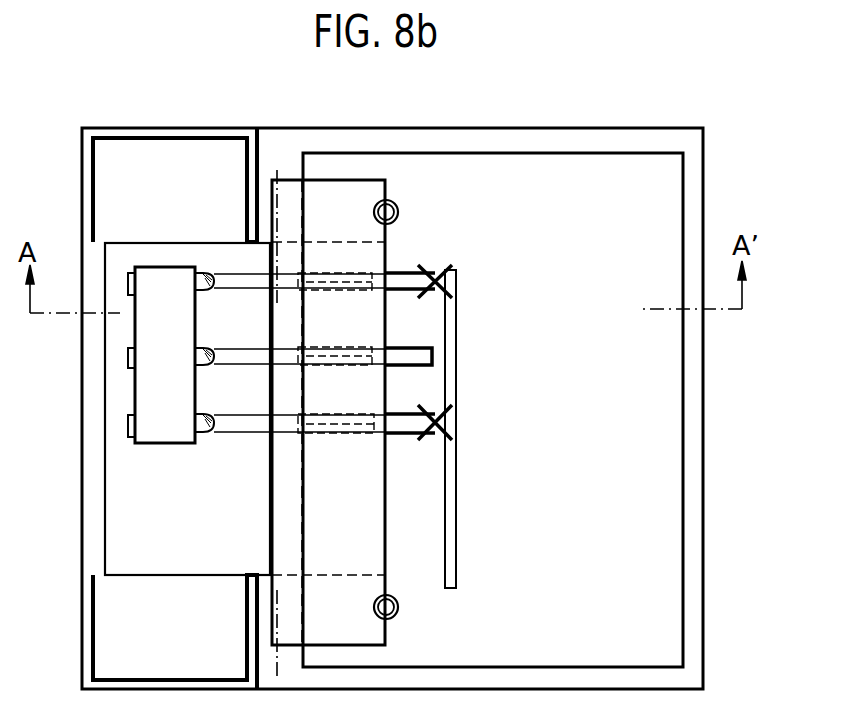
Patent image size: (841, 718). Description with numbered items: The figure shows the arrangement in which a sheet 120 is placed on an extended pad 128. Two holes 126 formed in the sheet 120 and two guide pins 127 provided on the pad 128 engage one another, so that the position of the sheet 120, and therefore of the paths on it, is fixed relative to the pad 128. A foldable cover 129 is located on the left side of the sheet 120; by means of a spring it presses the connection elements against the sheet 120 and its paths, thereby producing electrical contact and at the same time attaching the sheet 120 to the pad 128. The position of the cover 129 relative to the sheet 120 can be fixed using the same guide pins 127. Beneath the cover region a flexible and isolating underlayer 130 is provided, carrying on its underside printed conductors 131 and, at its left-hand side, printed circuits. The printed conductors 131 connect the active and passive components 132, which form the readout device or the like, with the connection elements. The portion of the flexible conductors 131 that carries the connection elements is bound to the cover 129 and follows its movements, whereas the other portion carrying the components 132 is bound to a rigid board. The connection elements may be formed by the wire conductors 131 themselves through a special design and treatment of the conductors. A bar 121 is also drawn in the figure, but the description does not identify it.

The sheet 120 is at (520, 167).
The contact bar 121 is at (400, 280).
The holes 126 is at (398, 207).
The guide pins 127 is at (383, 200).
The extended pad 128 is at (607, 170).
The foldable cover 129 is at (312, 193).
The flexible and isolating underlayer 130 is at (127, 472).
The printed conductors 131 is at (252, 430).
The active and passive components 132 is at (152, 387).